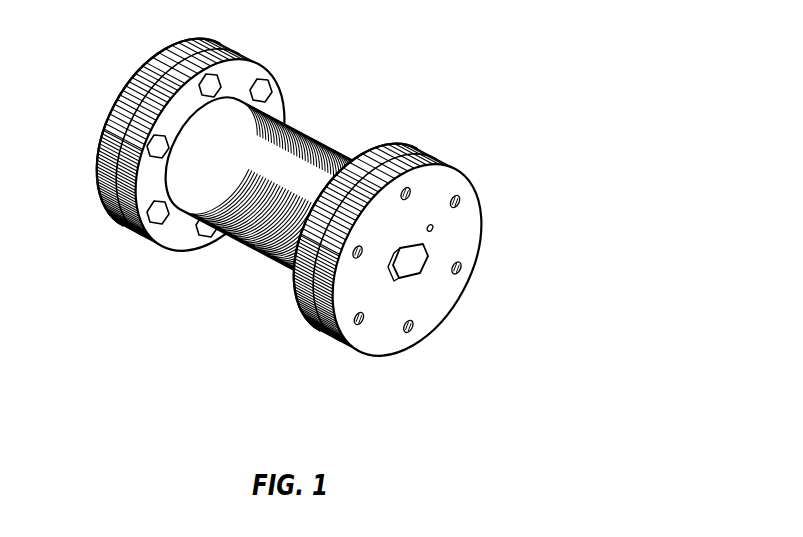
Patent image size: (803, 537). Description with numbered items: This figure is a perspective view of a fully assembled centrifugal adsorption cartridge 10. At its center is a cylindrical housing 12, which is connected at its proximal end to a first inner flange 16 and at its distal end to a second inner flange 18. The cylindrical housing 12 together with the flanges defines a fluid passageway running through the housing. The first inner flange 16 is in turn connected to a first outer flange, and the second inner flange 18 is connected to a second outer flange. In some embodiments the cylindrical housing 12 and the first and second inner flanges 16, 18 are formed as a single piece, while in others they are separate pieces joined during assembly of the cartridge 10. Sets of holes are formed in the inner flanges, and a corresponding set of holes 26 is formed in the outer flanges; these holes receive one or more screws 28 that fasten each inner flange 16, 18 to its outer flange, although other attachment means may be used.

The centrifugal adsorption cartridge 10 is at (379, 197).
The cylindrical housing 12 is at (310, 138).
The first inner flange 16 is at (214, 144).
The second inner flange 18 is at (384, 248).
The holes 26 is at (410, 333).
The screws 28 is at (137, 230).